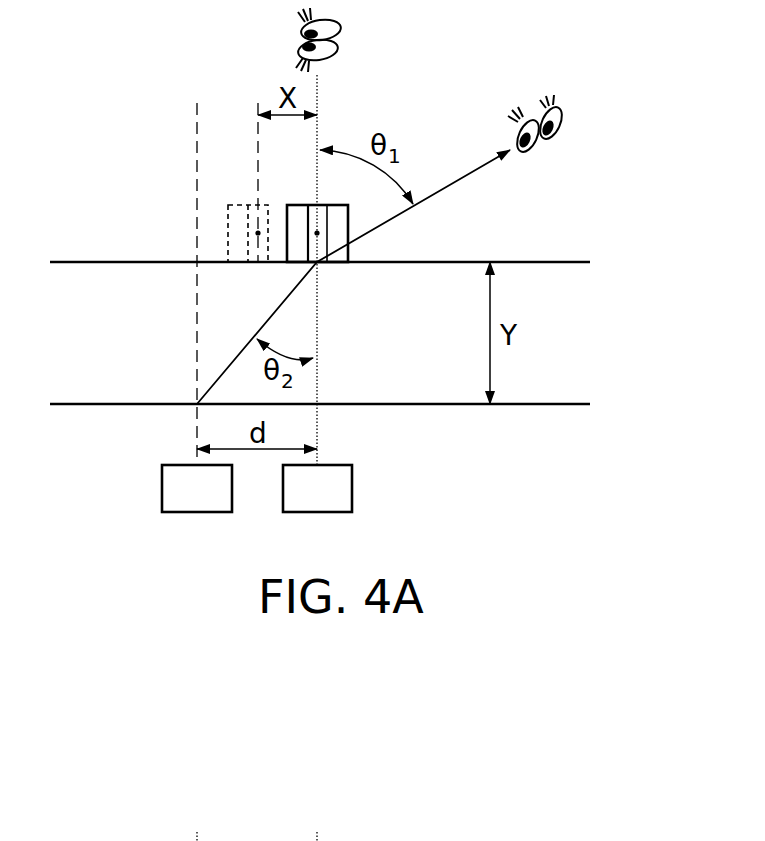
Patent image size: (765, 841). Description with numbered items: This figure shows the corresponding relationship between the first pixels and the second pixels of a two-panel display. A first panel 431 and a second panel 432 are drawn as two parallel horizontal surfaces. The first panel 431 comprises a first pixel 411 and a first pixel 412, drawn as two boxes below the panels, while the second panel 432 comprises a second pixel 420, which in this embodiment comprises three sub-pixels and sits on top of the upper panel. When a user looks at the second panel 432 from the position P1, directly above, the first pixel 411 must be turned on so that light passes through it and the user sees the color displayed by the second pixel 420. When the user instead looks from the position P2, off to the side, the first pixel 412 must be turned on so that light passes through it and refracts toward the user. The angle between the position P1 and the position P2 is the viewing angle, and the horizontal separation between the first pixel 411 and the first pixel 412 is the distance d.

The first pixel 411 is at (353, 487).
The first pixel 412 is at (161, 488).
The second pixel 420 is at (298, 204).
The first panel 431 is at (546, 402).
The second panel 432 is at (547, 260).
The position P1 is at (341, 28).
The position P2 is at (563, 130).